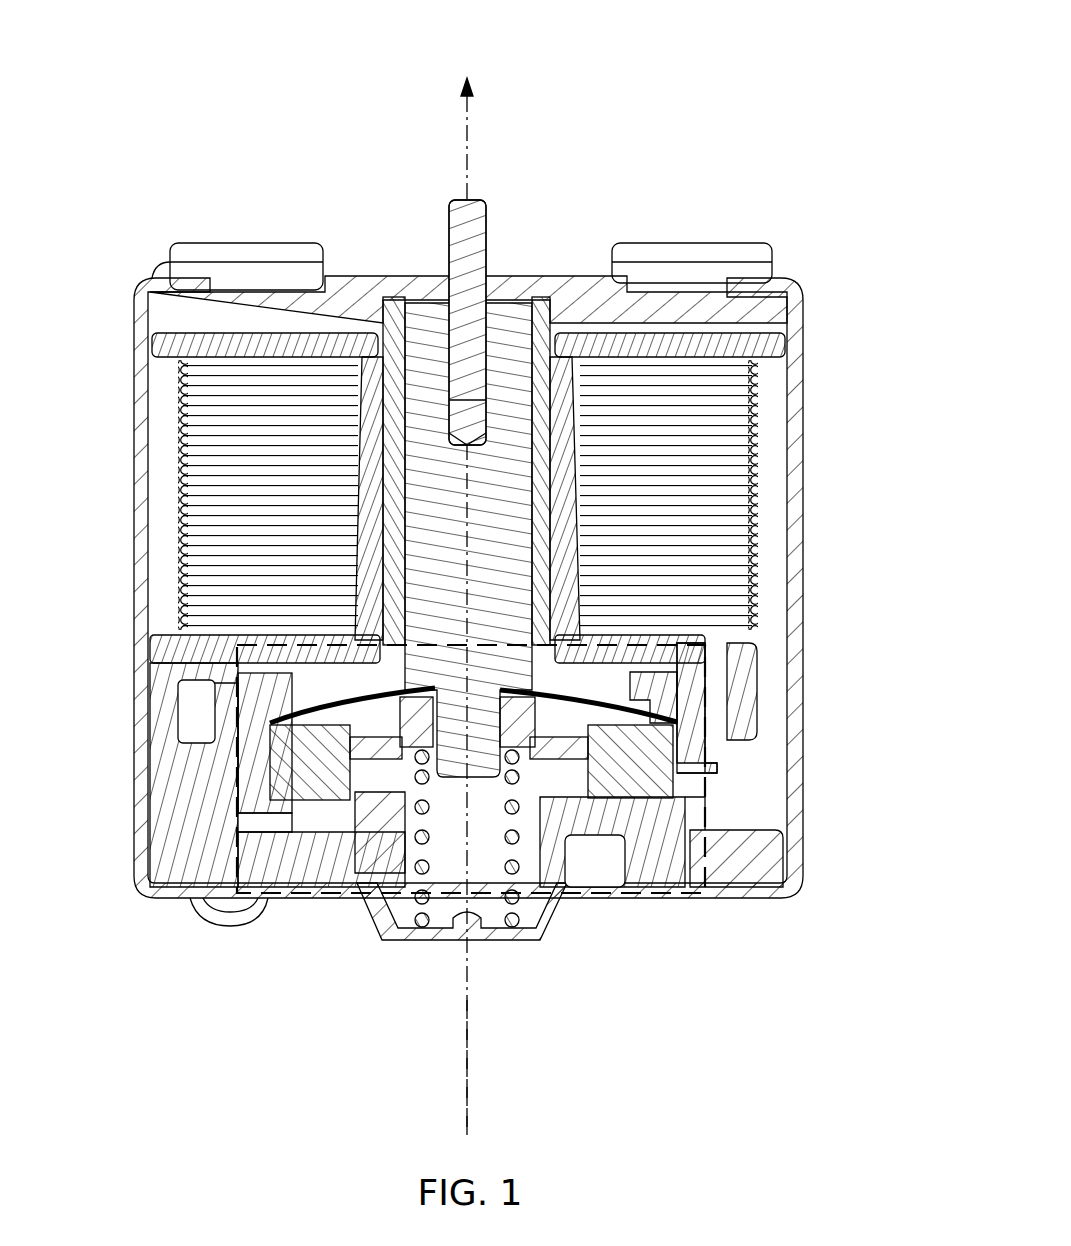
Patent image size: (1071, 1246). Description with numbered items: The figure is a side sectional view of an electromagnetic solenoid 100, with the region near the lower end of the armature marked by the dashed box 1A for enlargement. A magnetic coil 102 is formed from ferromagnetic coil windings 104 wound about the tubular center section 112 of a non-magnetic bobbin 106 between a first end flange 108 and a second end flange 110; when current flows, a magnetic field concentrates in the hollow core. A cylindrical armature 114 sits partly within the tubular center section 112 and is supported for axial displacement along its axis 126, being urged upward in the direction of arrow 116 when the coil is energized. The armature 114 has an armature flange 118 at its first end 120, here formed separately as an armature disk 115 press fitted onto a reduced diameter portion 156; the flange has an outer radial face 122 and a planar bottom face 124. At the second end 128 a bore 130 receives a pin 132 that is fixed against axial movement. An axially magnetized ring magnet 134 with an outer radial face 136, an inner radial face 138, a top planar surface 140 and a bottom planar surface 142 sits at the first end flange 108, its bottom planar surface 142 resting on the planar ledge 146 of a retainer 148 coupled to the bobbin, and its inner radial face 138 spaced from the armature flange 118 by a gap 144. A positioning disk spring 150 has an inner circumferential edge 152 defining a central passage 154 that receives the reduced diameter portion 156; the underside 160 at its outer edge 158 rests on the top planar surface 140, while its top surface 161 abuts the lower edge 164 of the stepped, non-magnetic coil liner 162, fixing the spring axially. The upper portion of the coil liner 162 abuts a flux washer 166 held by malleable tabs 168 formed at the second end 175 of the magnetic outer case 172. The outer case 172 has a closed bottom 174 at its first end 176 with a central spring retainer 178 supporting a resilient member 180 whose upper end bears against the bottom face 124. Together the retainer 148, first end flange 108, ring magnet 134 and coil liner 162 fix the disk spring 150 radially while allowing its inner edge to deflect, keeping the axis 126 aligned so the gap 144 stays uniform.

The electromagnetic solenoid 100 is at (718, 52).
The magnetic coil 102 is at (767, 398).
The coil windings 104 is at (760, 465).
The bobbin 106 is at (662, 335).
The first end flange 108 is at (760, 658).
The second end flange 110 is at (793, 345).
The tubular center section 112 is at (620, 480).
The armature 114 is at (300, 500).
The armature disk 115 is at (520, 900).
The arrow 116 is at (480, 122).
The armature flange 118 is at (355, 905).
The first end 120 is at (300, 735).
The outer radial face 122 is at (700, 745).
The bottom face 124 is at (580, 860).
The axis 126 is at (480, 1090).
The second end 128 is at (318, 290).
The bore 130 is at (320, 410).
The pin 132 is at (488, 205).
The ring magnet 134 is at (640, 770).
The outer radial face 136 is at (200, 770).
The inner radial face 138 is at (320, 880).
The top planar surface 140 is at (190, 690).
The bottom planar surface 142 is at (290, 900).
The gap 144 is at (610, 860).
The planar ledge 146 is at (705, 805).
The retainer 148 is at (750, 870).
The disk spring 150 is at (590, 635).
The inner circumferential edge 152 is at (400, 620).
The central passage 154 is at (380, 700).
The reduced diameter portion 156 is at (378, 905).
The outer edge 158 is at (185, 720).
The underside 160 is at (555, 880).
The top surface 161 is at (620, 600).
The coil liner 162 is at (376, 340).
The lower edge 164 is at (660, 700).
The flux washer 166 is at (584, 292).
The malleable tabs 168 is at (170, 270).
The outer case 172 is at (138, 452).
The closed bottom 174 is at (745, 905).
The second end 175 is at (128, 280).
The first end 176 is at (128, 900).
The spring retainer 178 is at (432, 930).
The resilient member 180 is at (505, 930).
The detail view region 1A is at (710, 820).